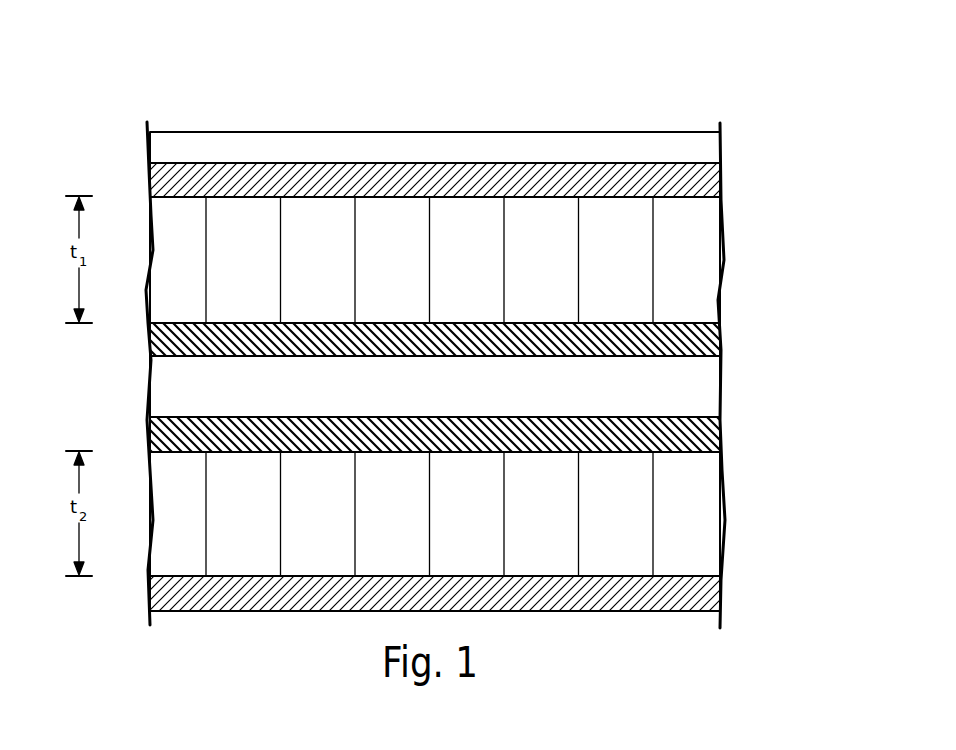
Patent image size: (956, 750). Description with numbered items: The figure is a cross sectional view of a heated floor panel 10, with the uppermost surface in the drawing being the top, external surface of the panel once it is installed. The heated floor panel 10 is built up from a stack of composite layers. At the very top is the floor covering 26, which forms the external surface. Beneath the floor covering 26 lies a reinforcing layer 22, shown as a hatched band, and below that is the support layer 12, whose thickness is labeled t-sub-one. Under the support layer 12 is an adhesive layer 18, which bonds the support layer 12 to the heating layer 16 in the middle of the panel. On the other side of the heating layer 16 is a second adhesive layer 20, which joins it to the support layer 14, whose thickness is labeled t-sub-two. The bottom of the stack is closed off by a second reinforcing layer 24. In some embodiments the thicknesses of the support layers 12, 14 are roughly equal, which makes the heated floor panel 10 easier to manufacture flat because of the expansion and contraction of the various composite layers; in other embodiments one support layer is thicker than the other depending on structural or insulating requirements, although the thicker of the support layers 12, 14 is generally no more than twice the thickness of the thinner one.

The heated floor panel 10 is at (656, 92).
The support layer 12 is at (693, 215).
The support layer 14 is at (705, 470).
The heating layer 16 is at (705, 365).
The adhesive layer 18 is at (705, 343).
The adhesive layer 20 is at (705, 435).
The reinforcing layer 22 is at (702, 179).
The reinforcing layer 24 is at (705, 595).
The floor covering 26 is at (700, 143).